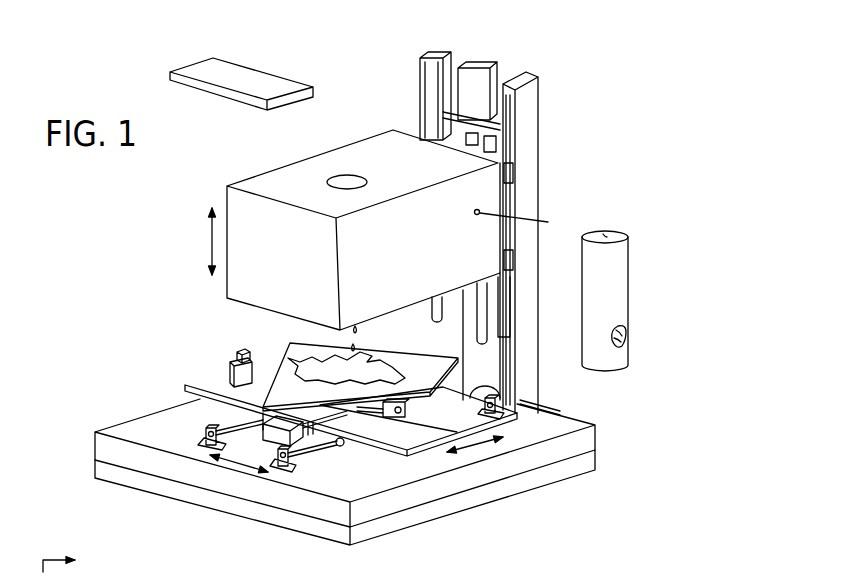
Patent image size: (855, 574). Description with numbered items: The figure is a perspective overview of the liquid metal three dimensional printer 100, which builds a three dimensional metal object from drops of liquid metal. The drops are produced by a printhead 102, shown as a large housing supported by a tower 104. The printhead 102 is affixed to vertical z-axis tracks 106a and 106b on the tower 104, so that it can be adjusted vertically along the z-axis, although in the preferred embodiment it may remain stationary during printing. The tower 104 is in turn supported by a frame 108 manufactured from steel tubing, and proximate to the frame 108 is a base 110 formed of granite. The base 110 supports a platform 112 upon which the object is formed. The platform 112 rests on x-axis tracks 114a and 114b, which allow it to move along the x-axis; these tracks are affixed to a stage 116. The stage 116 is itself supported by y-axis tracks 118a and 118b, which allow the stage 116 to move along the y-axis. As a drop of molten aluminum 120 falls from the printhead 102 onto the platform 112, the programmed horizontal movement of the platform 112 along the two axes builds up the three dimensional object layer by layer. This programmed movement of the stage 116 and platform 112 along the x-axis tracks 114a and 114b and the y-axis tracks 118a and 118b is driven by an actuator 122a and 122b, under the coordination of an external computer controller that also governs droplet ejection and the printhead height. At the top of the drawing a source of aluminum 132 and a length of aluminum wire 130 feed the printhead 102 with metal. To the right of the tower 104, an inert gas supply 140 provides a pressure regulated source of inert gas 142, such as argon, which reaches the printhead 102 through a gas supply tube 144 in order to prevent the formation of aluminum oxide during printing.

The liquid metal 3D printer 100 is at (556, 86).
The printhead 102 is at (263, 181).
The tower 104 is at (556, 173).
The vertical z-axis track 106a is at (419, 92).
The vertical z-axis track 106b is at (497, 130).
The frame 108 is at (100, 470).
The base 110 is at (127, 432).
The platform 112 is at (267, 351).
The x-axis track 114a is at (387, 430).
The x-axis track 114b is at (540, 410).
The stage 116 is at (210, 382).
The y-axis track 118a is at (220, 425).
The y-axis track 118b is at (355, 441).
The drop of molten aluminum 120 is at (377, 341).
The actuator 122a is at (250, 383).
The actuator 122b is at (312, 430).
The aluminum wire 130 is at (347, 182).
The source of aluminum 132 is at (178, 76).
The inert gas supply 140 is at (583, 332).
The inert gas 142 is at (627, 371).
The gas supply tube 144 is at (605, 237).